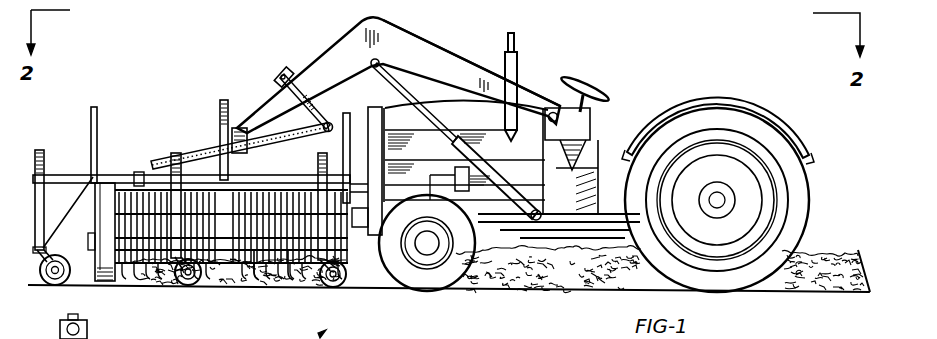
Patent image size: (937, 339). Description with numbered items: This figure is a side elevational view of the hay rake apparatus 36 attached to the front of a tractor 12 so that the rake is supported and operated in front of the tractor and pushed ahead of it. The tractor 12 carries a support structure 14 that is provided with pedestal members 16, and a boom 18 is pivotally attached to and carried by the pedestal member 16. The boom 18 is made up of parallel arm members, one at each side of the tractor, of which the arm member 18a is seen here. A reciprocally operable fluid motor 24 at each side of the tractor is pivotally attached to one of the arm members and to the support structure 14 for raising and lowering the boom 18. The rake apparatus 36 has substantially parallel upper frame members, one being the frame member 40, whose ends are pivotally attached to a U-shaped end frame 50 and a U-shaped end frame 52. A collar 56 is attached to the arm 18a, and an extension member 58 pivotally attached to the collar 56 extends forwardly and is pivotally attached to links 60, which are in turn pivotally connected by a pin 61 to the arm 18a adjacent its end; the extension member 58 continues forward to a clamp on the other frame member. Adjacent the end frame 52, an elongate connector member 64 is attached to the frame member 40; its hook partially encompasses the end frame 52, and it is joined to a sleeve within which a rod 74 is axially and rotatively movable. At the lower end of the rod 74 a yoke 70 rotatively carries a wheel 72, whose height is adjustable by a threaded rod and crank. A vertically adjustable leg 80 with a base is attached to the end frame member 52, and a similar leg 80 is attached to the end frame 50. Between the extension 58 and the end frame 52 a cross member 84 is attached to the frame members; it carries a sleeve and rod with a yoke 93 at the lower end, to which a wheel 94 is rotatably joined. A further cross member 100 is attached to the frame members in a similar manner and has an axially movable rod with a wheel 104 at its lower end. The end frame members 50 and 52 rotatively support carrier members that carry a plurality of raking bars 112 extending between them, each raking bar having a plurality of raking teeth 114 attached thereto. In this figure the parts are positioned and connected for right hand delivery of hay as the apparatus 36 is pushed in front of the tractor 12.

The tractor 12 is at (632, 125).
The support structure 14 is at (597, 210).
The pedestal member 16 is at (580, 130).
The boom 18 is at (349, 18).
The arm member 18a is at (428, 52).
The reciprocally operable fluid motor 24 is at (472, 148).
The hay rake apparatus 36 is at (191, 187).
The upper frame member 40 is at (194, 180).
The U-shaped end frame 50 is at (352, 188).
The U-shaped end frame 52 is at (113, 177).
The collar 56 is at (297, 78).
The extension member 58 is at (320, 106).
The links 60 is at (243, 140).
The pin 61 is at (229, 126).
The elongate connector member 64 is at (68, 175).
The yoke 70 is at (220, 331).
The wheel 72 is at (51, 288).
The rod 74 is at (58, 330).
The leg 80 is at (91, 108).
The cross member 84 is at (139, 173).
The yoke 93 is at (175, 288).
The wheel 94 is at (189, 290).
The cross member 100 is at (290, 183).
The wheel 104 is at (338, 287).
The raking bars 112 is at (290, 286).
The raking teeth 114 is at (257, 286).